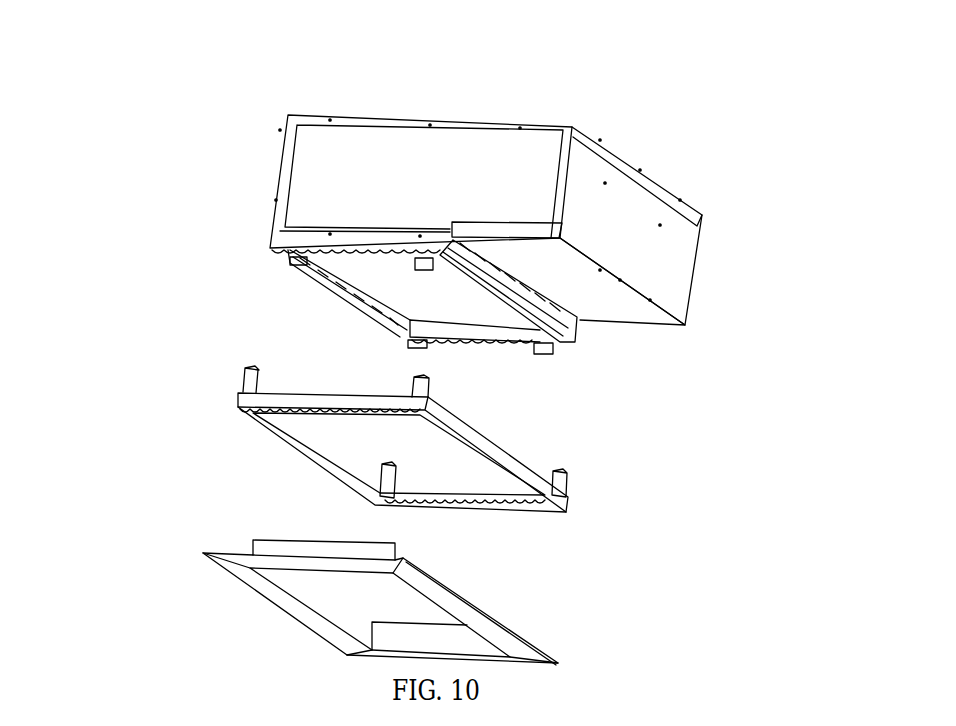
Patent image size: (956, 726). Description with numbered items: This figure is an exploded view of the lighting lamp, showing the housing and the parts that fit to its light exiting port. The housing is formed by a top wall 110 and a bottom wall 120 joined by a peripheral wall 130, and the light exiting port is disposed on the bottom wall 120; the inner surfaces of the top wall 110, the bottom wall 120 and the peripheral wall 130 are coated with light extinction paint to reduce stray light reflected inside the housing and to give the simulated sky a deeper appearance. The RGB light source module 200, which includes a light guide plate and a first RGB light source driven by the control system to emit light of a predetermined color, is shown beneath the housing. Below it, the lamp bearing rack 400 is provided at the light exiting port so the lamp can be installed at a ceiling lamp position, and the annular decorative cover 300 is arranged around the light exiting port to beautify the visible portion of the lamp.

The top wall 110 is at (505, 125).
The bottom wall 120 is at (607, 300).
The peripheral wall 130 is at (653, 245).
The RGB light source module 200 is at (397, 277).
The annular decorative cover 300 is at (247, 557).
The lamp bearing rack 400 is at (240, 396).